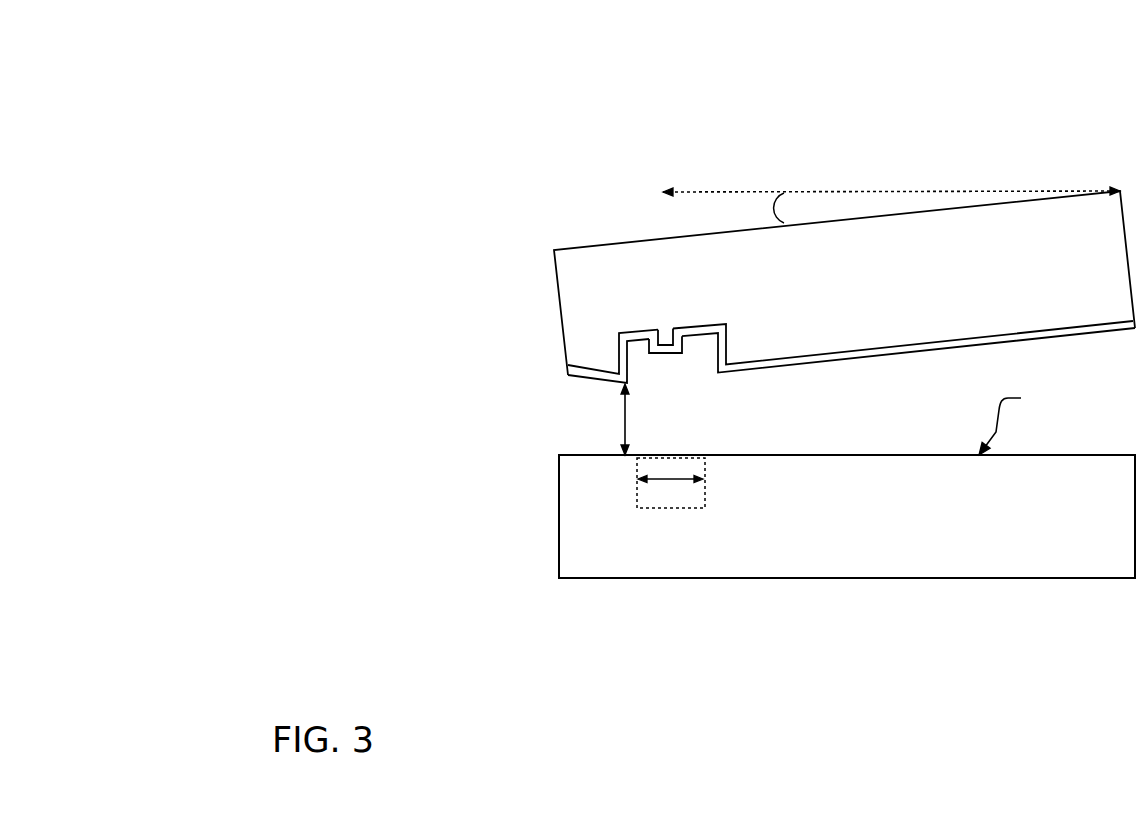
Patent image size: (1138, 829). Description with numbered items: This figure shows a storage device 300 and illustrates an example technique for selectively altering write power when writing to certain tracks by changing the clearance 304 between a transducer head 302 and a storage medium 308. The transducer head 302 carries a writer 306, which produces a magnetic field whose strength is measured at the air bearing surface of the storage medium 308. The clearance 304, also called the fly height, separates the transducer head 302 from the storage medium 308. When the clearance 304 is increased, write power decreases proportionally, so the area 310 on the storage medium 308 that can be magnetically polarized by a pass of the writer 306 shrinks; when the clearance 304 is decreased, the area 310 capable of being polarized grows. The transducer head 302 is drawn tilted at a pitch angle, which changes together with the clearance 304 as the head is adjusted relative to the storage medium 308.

The storage device 300 is at (386, 91).
The transducer head 302 is at (837, 300).
The clearance 304 is at (624, 418).
The writer 306 is at (662, 337).
The storage medium 308 is at (850, 523).
The area 310 is at (637, 494).